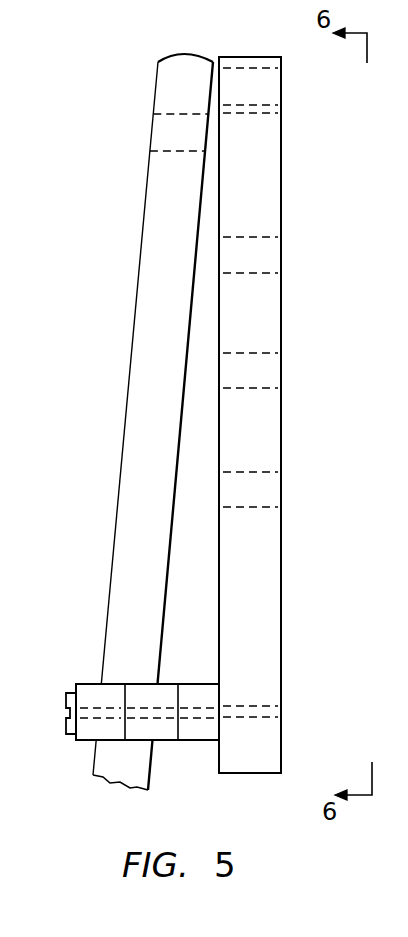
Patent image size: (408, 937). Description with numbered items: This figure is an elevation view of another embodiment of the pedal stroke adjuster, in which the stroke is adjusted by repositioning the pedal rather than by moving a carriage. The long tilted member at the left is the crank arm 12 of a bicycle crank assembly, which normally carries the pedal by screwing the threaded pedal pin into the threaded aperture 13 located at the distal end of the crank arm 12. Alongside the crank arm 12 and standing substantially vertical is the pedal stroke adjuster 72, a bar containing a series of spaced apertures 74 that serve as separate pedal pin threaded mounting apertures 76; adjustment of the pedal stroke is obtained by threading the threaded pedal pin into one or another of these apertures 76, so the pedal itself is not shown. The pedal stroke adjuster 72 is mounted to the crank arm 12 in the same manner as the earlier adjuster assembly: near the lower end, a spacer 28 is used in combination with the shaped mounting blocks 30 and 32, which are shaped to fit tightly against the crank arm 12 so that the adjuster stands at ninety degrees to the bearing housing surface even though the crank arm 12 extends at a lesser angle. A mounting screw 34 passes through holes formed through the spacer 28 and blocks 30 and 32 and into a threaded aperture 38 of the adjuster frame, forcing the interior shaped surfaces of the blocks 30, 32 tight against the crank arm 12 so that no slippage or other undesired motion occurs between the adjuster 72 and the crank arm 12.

The crank arm 12 is at (128, 380).
The threaded aperture 13 is at (153, 131).
The spacer 28 is at (205, 741).
The shaped mounting block 30 is at (160, 741).
The shaped mounting block 32 is at (95, 683).
The mounting screw 34 is at (66, 725).
The threaded aperture 38 is at (284, 710).
The pedal stroke adjuster 72 is at (283, 614).
The spaced apertures 74 is at (282, 135).
The pedal pin threaded mounting apertures 76 is at (282, 90).